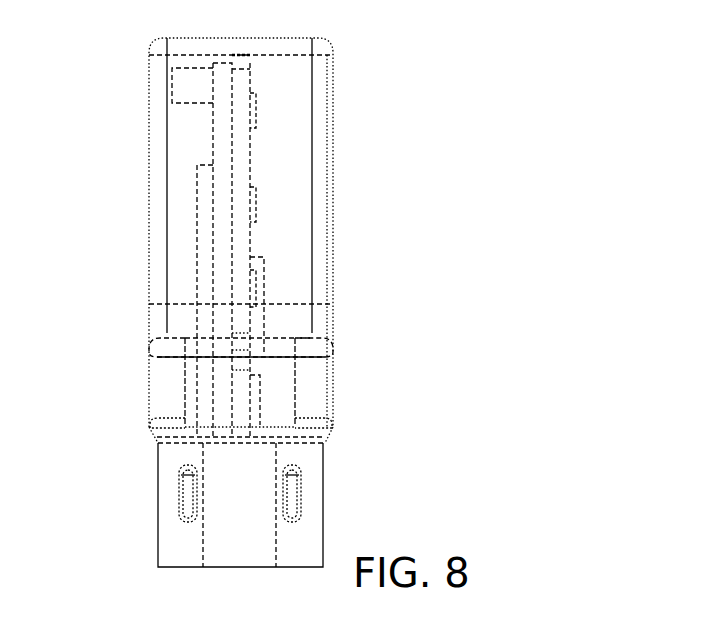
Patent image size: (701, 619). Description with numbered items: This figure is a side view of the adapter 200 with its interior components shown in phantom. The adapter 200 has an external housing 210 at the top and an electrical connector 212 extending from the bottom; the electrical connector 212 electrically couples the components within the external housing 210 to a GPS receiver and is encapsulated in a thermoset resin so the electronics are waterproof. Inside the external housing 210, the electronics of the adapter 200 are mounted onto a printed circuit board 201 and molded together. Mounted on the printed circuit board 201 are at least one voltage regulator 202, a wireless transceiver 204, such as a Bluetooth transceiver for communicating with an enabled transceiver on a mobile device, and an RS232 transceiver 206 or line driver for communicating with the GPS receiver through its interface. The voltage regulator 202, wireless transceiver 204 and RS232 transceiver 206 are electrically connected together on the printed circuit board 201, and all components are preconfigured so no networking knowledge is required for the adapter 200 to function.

The adapter 200 is at (455, 128).
The printed circuit board 201 is at (250, 162).
The voltage regulator 202 is at (260, 401).
The wireless transceiver 204 is at (172, 88).
The RS232 transceiver 206 is at (264, 278).
The external housing 210 is at (150, 244).
The electrical connector 212 is at (157, 513).